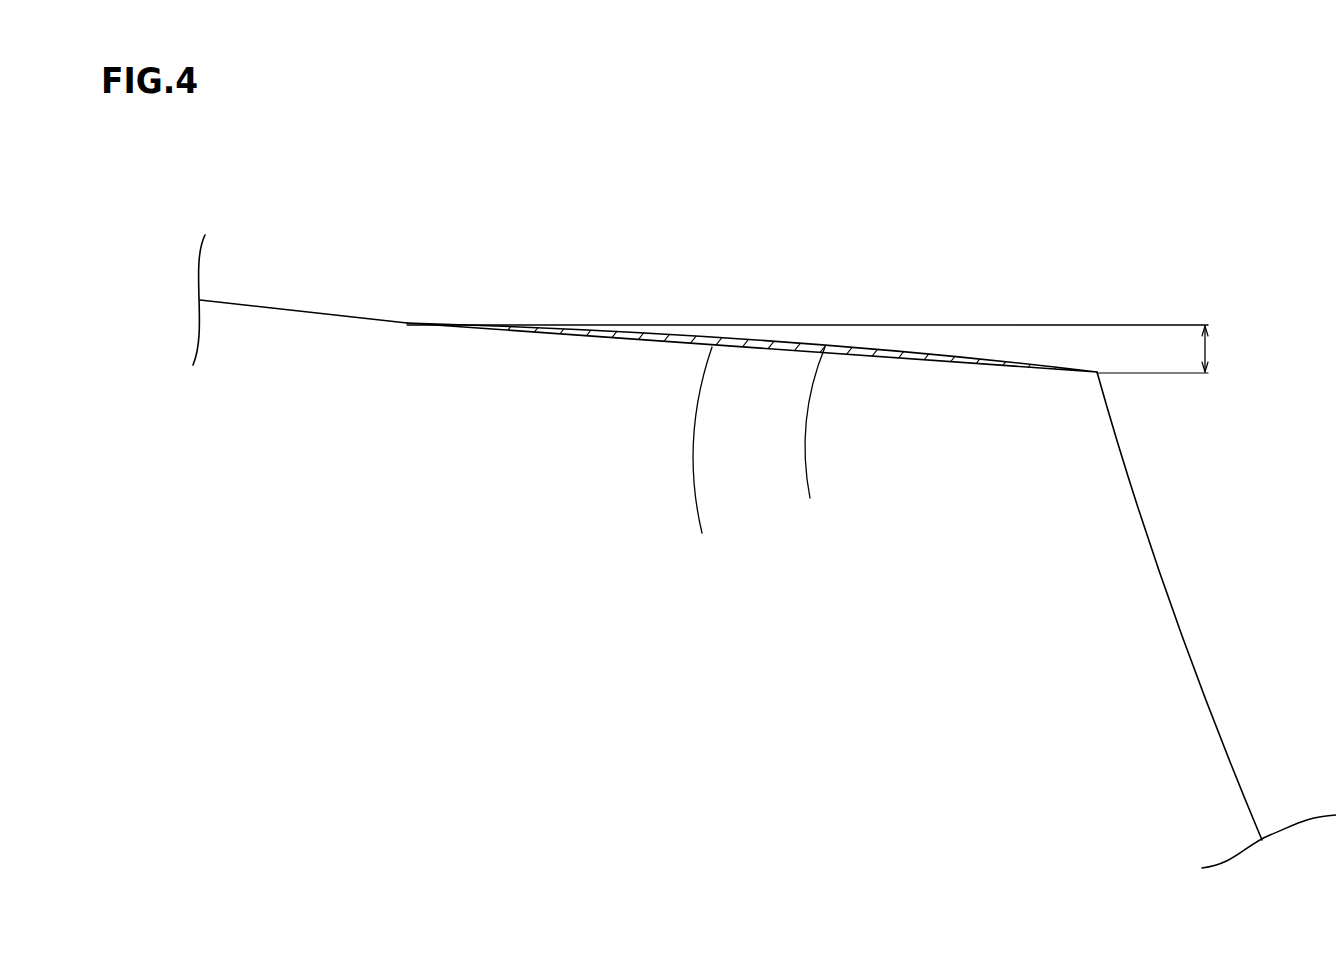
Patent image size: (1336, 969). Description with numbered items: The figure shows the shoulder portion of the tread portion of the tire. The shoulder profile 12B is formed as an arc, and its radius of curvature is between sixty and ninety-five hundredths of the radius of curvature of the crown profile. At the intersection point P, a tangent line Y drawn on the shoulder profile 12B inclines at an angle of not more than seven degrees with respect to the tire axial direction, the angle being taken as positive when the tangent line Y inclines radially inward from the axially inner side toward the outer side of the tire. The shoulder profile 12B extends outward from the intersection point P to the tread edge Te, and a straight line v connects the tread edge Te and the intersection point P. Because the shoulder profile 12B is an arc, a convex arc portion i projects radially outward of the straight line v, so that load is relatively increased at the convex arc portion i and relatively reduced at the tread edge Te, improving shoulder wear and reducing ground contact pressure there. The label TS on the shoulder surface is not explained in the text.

The intersection point P is at (406, 315).
The tooth surface TS is at (862, 344).
The shoulder profile 12B is at (772, 286).
The tangent line Y is at (1070, 325).
The tread edge Te is at (1100, 373).
The straight line v is at (702, 451).
The convex arc portion i is at (815, 438).